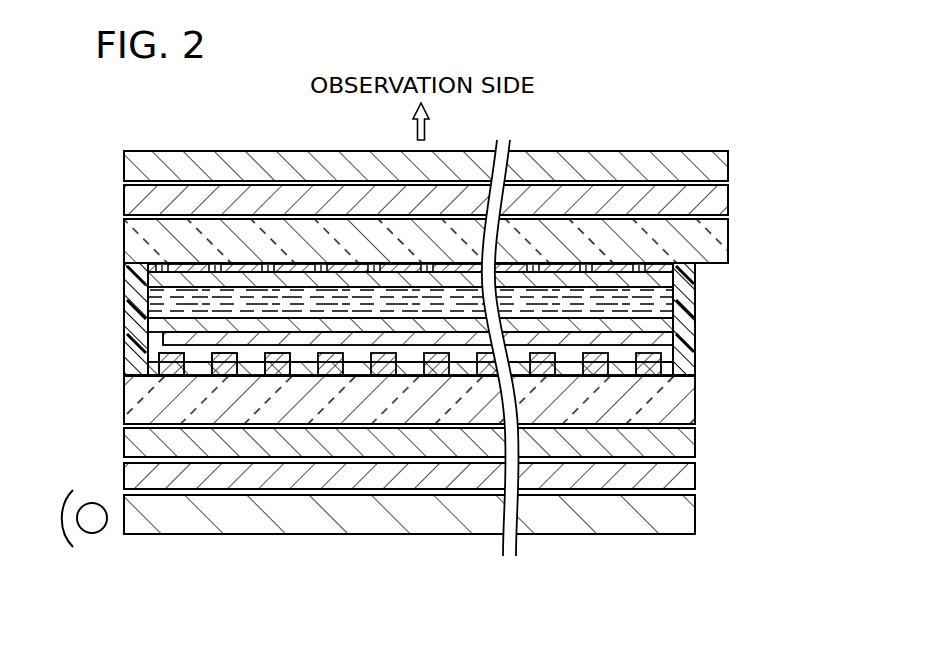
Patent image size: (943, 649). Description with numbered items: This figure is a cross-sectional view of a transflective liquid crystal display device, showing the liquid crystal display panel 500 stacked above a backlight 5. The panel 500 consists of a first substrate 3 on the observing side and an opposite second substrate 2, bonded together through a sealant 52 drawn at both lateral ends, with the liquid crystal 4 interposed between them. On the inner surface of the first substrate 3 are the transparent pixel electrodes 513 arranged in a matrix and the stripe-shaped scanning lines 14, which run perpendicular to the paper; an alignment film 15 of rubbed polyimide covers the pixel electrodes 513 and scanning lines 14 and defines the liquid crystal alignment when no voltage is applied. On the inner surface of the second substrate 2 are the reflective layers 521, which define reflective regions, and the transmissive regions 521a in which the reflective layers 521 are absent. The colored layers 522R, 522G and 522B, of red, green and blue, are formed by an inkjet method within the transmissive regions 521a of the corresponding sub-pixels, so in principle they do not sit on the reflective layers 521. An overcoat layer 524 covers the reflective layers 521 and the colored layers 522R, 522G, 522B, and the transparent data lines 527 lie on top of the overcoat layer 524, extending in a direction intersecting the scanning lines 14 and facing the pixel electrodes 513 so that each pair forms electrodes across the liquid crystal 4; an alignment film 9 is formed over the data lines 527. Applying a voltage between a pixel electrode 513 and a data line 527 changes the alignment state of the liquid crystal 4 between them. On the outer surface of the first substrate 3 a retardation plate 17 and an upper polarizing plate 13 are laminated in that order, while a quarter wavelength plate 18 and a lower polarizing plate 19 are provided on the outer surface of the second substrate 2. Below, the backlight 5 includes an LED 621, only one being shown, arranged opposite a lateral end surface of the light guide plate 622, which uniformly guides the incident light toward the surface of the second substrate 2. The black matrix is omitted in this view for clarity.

The liquid crystal display panel 500 is at (594, 131).
The upper polarizing plate 13 is at (722, 163).
The retardation plate 17 is at (722, 200).
The first substrate 3 is at (722, 236).
The pixel electrode 513 is at (178, 264).
The scanning line 14 is at (214, 264).
The sealant 52 is at (127, 273).
The liquid crystal 4 is at (128, 298).
The alignment film 15 is at (691, 276).
The alignment film 9 is at (668, 325).
The data line 527 is at (670, 336).
The overcoat layer 524 is at (670, 357).
The reflective layer 521 is at (142, 378).
The colored layer 522R is at (134, 347).
The colored layer 522G is at (220, 376).
The colored layer 522B is at (278, 373).
The transmissive region 521a is at (232, 376).
The second substrate 2 is at (682, 413).
The quarter wavelength plate 18 is at (690, 448).
The lower polarizing plate 19 is at (690, 478).
The light guide plate 622 is at (692, 508).
The LED 621 is at (90, 535).
The backlight 5 is at (593, 545).